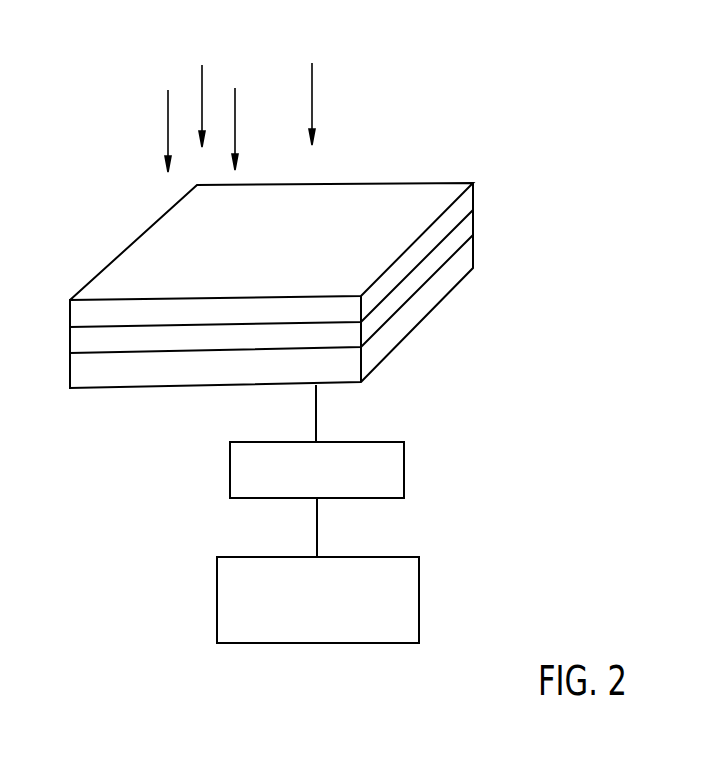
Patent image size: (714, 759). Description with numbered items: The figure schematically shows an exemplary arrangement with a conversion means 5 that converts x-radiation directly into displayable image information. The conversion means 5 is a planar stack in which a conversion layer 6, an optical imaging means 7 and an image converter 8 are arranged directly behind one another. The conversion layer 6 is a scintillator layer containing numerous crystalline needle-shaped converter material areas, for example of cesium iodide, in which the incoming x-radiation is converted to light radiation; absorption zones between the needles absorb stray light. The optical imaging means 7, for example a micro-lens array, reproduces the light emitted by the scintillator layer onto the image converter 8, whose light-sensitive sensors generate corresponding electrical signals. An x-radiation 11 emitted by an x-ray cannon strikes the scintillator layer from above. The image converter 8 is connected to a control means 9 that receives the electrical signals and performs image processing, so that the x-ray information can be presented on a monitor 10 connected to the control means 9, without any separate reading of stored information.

The conversion means 5 is at (326, 282).
The conversion layer 6 is at (473, 192).
The optical imaging means 7 is at (473, 222).
The image converter 8 is at (473, 252).
The control means 9 is at (397, 463).
The monitor 10 is at (413, 598).
The x-radiation 11 is at (350, 63).